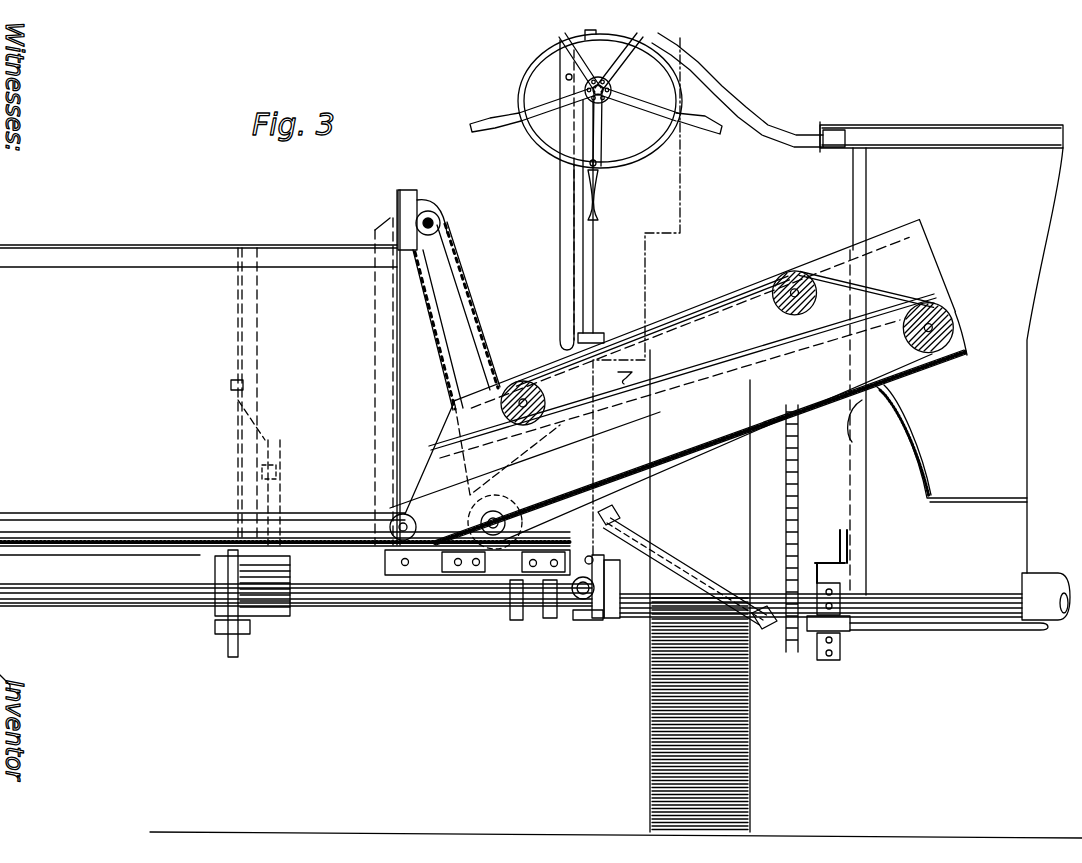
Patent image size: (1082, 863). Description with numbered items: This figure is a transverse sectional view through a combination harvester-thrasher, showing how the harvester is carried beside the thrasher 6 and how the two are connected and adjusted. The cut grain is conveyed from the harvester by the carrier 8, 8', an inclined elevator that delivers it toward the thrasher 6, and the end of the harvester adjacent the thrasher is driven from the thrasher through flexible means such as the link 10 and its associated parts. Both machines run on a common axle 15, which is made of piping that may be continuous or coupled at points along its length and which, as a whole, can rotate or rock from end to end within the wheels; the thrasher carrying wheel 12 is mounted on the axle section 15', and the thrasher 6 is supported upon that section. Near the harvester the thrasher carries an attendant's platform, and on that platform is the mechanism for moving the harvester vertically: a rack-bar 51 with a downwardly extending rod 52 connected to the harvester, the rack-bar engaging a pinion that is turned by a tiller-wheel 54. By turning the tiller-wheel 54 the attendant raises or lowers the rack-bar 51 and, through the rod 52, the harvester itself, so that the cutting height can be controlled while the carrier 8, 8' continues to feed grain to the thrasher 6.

The thrasher 6 is at (682, 46).
The carrier 8 is at (285, 571).
The carrier 8' is at (675, 420).
The link 10 is at (718, 584).
The carrying wheel 12 is at (650, 745).
The axle 15 is at (524, 609).
The axle section 15' is at (1046, 583).
The rack-bar 51 is at (601, 38).
The rod 52 is at (596, 276).
The tiller-wheel 54 is at (632, 100).